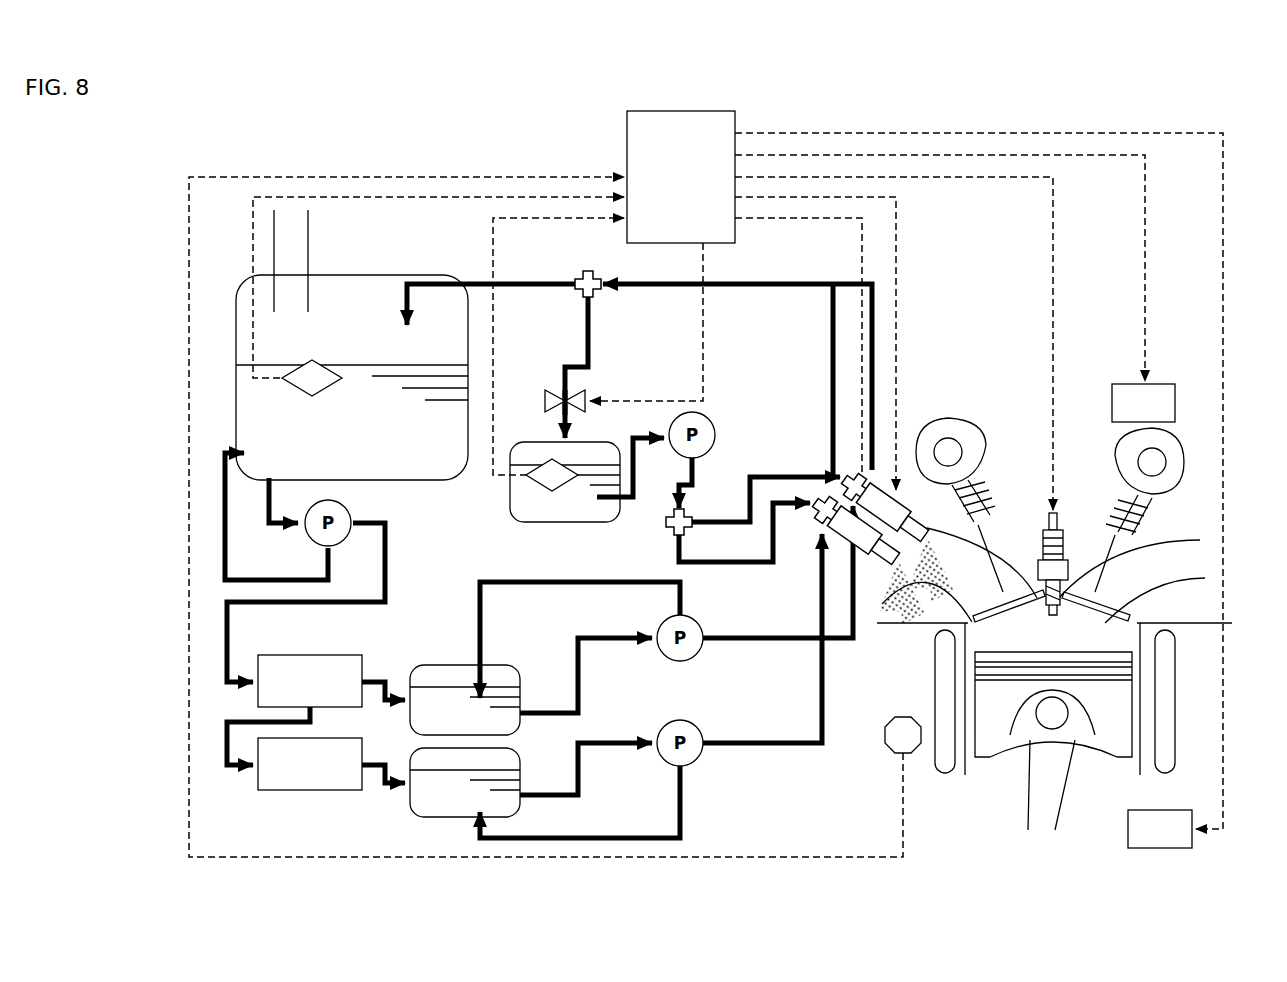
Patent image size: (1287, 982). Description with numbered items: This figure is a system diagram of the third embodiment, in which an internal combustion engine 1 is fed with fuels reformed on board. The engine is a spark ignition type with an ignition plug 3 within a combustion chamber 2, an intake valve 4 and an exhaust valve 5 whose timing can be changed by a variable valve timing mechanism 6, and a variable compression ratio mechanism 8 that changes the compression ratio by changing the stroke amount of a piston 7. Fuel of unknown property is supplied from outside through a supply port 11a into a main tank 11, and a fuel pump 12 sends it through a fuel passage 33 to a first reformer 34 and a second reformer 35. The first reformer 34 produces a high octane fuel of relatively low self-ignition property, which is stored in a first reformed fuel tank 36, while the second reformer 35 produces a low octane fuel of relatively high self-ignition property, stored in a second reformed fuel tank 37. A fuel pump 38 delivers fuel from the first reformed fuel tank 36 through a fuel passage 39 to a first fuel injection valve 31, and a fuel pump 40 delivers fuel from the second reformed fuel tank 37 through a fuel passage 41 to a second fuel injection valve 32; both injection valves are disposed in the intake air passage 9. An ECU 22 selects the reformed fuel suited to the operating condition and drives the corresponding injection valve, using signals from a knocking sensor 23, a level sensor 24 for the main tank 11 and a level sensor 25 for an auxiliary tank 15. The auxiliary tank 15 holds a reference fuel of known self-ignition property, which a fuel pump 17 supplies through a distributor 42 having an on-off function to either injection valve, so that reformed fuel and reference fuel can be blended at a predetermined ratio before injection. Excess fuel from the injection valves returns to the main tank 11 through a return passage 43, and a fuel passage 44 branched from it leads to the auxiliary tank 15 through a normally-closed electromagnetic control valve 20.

The internal combustion engine 1 is at (1210, 672).
The combustion chamber 2 is at (940, 675).
The ignition plug 3 is at (1064, 540).
The intake valve 4 is at (997, 560).
The exhaust valve 5 is at (1140, 545).
The variable valve timing mechanism 6 is at (1175, 405).
The piston 7 is at (1125, 730).
The variable compression ratio mechanism 8 is at (1185, 810).
The intake air passage 9 is at (897, 593).
The main tank 11 is at (468, 340).
The supply port 11a is at (308, 250).
The fuel pump 12 is at (353, 515).
The auxiliary tank 15 is at (560, 522).
The fuel pump 17 is at (715, 425).
The control valve 20 is at (545, 396).
The ECU 22 is at (627, 145).
The knocking sensor 23 is at (886, 745).
The level sensor 24 is at (325, 365).
The level sensor 25 is at (535, 460).
The first fuel injection valve 31 is at (880, 482).
The second fuel injection valve 32 is at (832, 540).
The fuel passage 33 is at (385, 578).
The first reformer 34 is at (302, 655).
The second reformer 35 is at (318, 790).
The first reformed fuel tank 36 is at (520, 670).
The second reformed fuel tank 37 is at (520, 760).
The fuel pump 38 is at (700, 620).
The fuel passage 39 is at (780, 642).
The fuel pump 40 is at (700, 725).
The fuel passage 41 is at (745, 760).
The distributor 42 is at (666, 526).
The return passage 43 is at (762, 288).
The fuel passage 44 is at (588, 333).